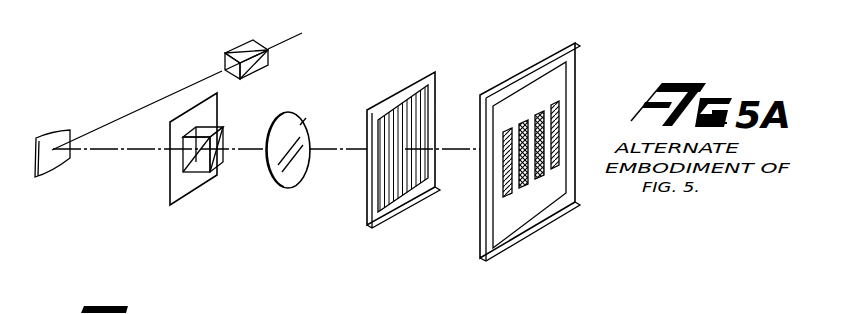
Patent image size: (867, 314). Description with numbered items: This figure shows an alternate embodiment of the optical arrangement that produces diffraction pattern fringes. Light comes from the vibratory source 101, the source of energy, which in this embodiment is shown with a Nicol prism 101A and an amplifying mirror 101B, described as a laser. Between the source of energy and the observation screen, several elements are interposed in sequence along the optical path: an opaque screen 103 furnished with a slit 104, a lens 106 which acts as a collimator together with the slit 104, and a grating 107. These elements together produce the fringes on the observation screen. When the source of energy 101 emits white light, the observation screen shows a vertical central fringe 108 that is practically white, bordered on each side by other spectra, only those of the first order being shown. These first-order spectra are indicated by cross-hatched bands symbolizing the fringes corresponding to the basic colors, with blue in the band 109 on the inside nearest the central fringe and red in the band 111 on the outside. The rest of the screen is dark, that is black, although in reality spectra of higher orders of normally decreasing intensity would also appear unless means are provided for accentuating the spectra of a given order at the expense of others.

The vibratory source 101 is at (84, 144).
The Nicol prism 101A is at (245, 44).
The amplifying mirror 101B is at (43, 131).
The opaque screen 103 is at (175, 176).
The slit 104 is at (219, 165).
The lens 106 is at (287, 183).
The grating 107 is at (403, 91).
The vertical central fringe 108 is at (509, 223).
The blue fringe band 109 is at (540, 181).
The red fringe band 111 is at (505, 167).